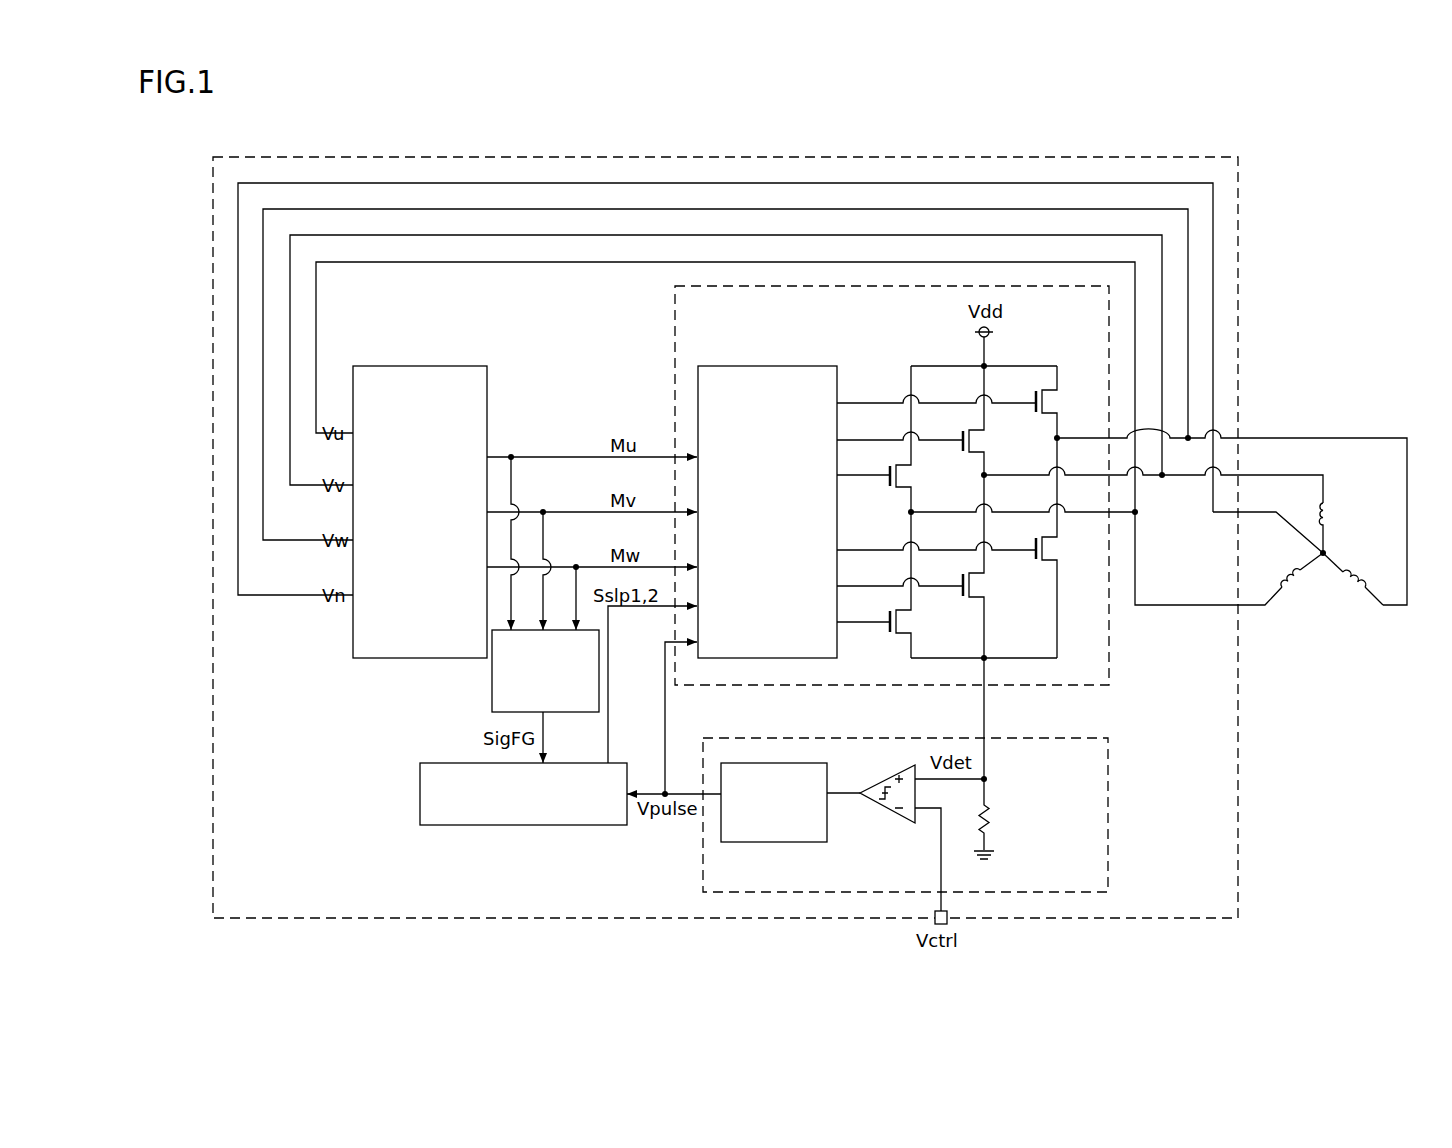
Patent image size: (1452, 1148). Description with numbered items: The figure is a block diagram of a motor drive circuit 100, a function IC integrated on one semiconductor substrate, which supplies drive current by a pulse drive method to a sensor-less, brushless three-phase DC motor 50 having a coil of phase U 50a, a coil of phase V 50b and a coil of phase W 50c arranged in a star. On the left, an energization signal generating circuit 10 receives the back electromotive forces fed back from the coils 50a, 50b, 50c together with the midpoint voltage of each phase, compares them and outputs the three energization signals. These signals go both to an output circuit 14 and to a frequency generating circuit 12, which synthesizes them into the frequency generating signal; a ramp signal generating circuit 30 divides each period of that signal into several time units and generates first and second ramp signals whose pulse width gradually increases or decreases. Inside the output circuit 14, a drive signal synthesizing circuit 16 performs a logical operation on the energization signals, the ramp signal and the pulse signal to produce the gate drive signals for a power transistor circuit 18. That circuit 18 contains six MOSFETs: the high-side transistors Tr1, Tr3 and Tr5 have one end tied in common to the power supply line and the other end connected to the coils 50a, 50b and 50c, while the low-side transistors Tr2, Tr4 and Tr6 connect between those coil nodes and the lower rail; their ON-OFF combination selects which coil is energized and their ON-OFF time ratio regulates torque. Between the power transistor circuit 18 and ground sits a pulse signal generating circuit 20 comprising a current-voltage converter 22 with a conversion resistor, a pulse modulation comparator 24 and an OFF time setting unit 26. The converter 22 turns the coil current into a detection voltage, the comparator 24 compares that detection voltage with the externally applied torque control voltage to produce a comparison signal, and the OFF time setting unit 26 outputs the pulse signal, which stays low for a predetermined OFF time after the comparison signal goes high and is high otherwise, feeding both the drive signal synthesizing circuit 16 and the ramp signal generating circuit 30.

The energization signal generating circuit 10 is at (405, 366).
The frequency generating circuit 12 is at (568, 712).
The output circuit 14 is at (1109, 640).
The drive signal synthesizing circuit 16 is at (780, 366).
The power transistor circuit 18 is at (963, 571).
The pulse signal generating circuit 20 is at (1109, 818).
The current-voltage converter 22 is at (1015, 819).
The pulse modulation comparator 24 is at (890, 812).
The OFF time setting unit 26 is at (777, 842).
The ramp signal generating circuit 30 is at (543, 825).
The motor 50 is at (1323, 584).
The coil of phase U 50a is at (1289, 570).
The coil of phase V 50b is at (1343, 528).
The coil of phase W 50c is at (1356, 579).
The motor drive circuit 100 is at (1238, 890).
The transistor Tr1 is at (916, 439).
The transistor Tr2 is at (916, 585).
The transistor Tr3 is at (990, 420).
The transistor Tr4 is at (990, 566).
The transistor Tr5 is at (1063, 402).
The transistor Tr6 is at (1063, 548).